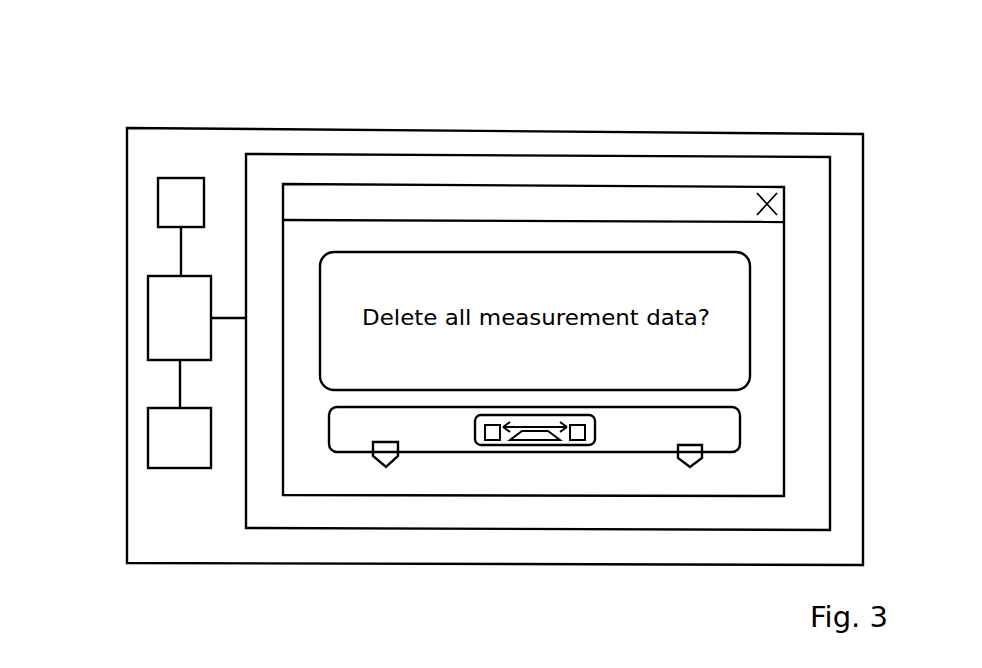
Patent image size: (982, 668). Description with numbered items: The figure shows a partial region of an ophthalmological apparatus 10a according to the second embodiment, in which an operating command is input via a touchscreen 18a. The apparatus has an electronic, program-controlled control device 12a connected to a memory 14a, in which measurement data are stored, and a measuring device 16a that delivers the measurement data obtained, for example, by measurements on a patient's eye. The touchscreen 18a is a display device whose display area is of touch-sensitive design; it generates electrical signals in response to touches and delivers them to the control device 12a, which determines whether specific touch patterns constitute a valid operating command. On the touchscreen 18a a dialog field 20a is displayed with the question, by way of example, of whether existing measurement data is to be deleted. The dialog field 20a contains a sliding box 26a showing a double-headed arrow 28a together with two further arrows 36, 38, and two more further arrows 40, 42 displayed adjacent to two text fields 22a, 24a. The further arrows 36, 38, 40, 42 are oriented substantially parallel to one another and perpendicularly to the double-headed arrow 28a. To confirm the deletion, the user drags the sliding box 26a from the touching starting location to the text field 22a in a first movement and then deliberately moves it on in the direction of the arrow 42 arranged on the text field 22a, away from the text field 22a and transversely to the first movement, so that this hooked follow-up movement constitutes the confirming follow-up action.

The ophthalmological apparatus 10a is at (604, 103).
The control device 12a is at (148, 310).
The memory 14a is at (158, 215).
The measuring device 16a is at (148, 433).
The touchscreen 18a is at (362, 155).
The dialog field 20a is at (477, 185).
The text field 22a is at (362, 439).
The text field 24a is at (715, 443).
The sliding box 26a is at (518, 447).
The double-headed arrow 28a is at (537, 447).
The further arrow 36 is at (572, 450).
The further arrow 38 is at (478, 447).
The further arrow 40 is at (690, 468).
The further arrow 42 is at (382, 466).